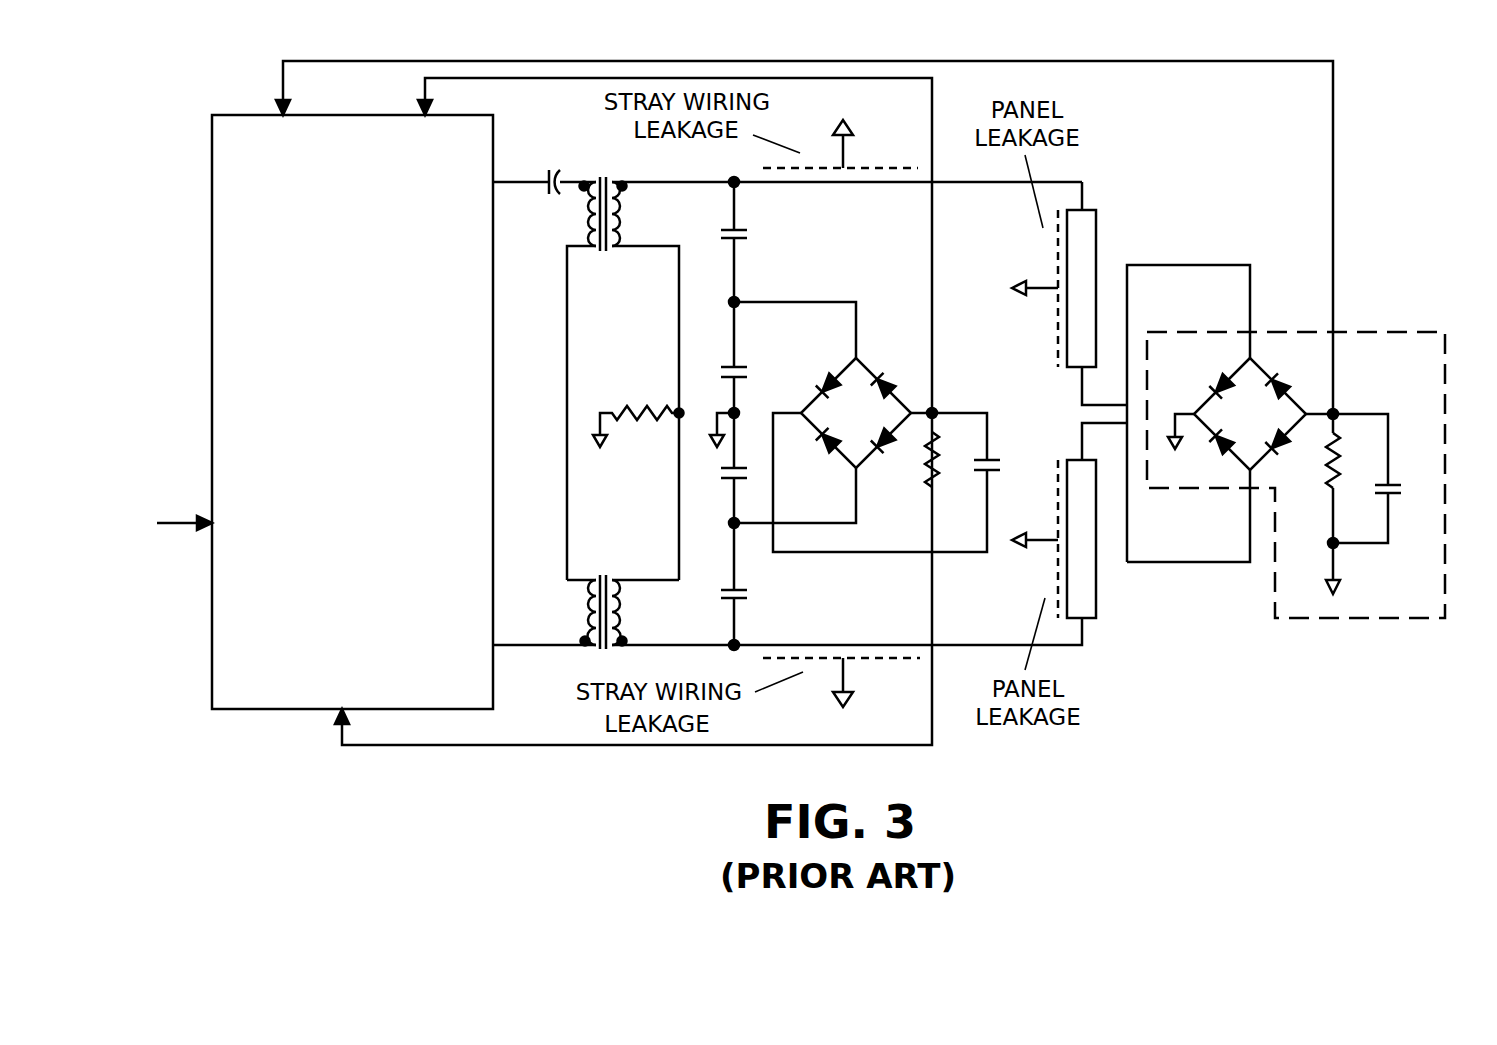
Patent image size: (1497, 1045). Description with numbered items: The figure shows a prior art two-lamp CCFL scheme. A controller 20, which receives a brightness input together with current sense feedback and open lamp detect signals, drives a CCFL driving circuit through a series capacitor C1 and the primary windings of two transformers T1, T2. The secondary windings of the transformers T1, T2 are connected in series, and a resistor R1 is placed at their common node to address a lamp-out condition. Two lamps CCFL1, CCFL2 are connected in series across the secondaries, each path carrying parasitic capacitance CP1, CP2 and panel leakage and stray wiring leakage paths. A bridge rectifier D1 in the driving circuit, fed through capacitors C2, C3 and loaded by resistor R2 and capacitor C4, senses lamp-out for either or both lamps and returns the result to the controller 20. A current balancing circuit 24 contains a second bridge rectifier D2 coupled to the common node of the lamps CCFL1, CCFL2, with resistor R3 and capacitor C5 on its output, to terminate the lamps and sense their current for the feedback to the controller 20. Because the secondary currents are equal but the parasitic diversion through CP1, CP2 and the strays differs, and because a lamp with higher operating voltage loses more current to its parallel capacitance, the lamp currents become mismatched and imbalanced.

The controller 20 is at (212, 265).
The current balancing circuit 24 is at (1322, 475).
The capacitor C1 is at (548, 166).
The transformer T1 is at (603, 199).
The transformer T2 is at (604, 597).
The resistor R1 is at (638, 412).
The parasitic capacitor CP1 is at (710, 232).
The capacitor C2 is at (717, 370).
The capacitor C3 is at (717, 471).
The parasitic capacitor CP2 is at (710, 598).
The bridge rectifier D1 is at (856, 402).
The resistor R2 is at (950, 459).
The capacitor C4 is at (1000, 452).
The cold cathode fluorescent lamp CCFL1 is at (1124, 288).
The cold cathode fluorescent lamp CCFL2 is at (1124, 539).
The bridge rectifier D2 is at (1246, 405).
The resistor R3 is at (1351, 460).
The capacitor C5 is at (1405, 475).